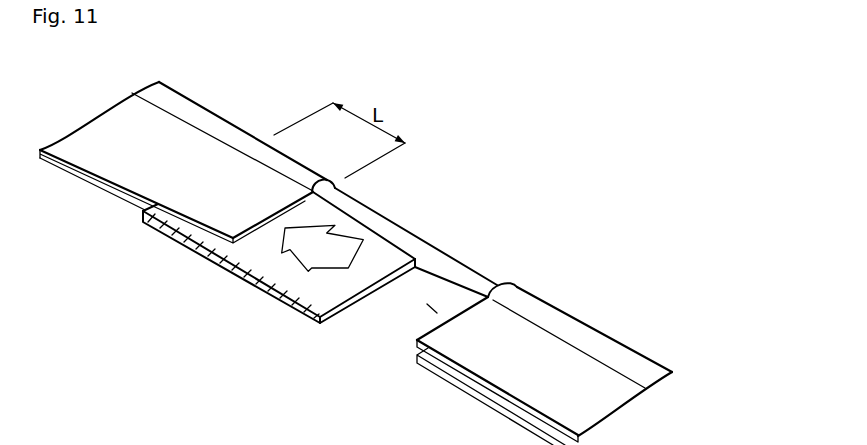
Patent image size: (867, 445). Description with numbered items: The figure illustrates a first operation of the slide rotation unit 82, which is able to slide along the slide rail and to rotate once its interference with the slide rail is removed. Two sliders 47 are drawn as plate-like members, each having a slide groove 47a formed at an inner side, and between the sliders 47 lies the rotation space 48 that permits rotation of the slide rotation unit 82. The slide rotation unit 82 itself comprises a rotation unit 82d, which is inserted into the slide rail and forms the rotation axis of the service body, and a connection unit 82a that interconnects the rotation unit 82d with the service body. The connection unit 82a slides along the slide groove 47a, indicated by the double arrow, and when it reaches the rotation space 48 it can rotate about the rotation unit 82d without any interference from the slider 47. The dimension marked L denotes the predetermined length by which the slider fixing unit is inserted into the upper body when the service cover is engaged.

The slider 47 is at (180, 150).
The slide groove 47a is at (108, 173).
The rotation space 48 is at (432, 308).
The slide rotation unit 82 is at (334, 225).
The connection unit 82a is at (375, 253).
The rotation unit 82d is at (447, 268).